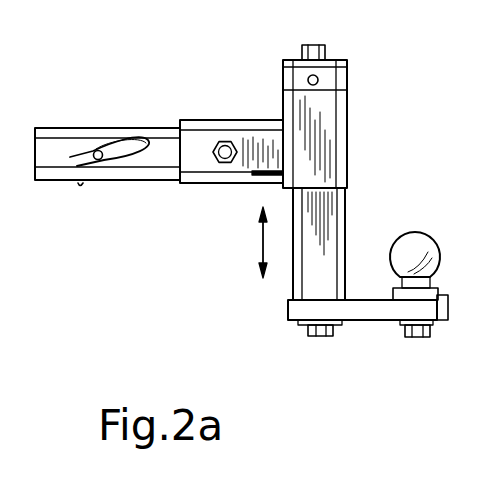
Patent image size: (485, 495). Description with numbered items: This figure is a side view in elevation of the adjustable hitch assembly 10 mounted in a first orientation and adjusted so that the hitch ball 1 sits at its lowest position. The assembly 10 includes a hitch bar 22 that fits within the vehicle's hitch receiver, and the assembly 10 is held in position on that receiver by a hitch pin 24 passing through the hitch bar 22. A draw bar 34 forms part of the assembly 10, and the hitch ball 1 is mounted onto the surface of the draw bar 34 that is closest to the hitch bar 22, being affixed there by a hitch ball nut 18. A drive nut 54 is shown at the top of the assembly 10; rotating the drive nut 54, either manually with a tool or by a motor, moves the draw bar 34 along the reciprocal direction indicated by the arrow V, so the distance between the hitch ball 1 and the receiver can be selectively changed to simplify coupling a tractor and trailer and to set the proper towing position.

The adjustable hitch assembly 10 is at (380, 86).
The hitch bar 22 is at (91, 133).
The hitch pin 24 is at (80, 184).
The drive nut 54 is at (313, 45).
The draw bar 34 is at (363, 316).
The hitch ball 1 is at (420, 263).
The hitch ball nut 18 is at (412, 338).